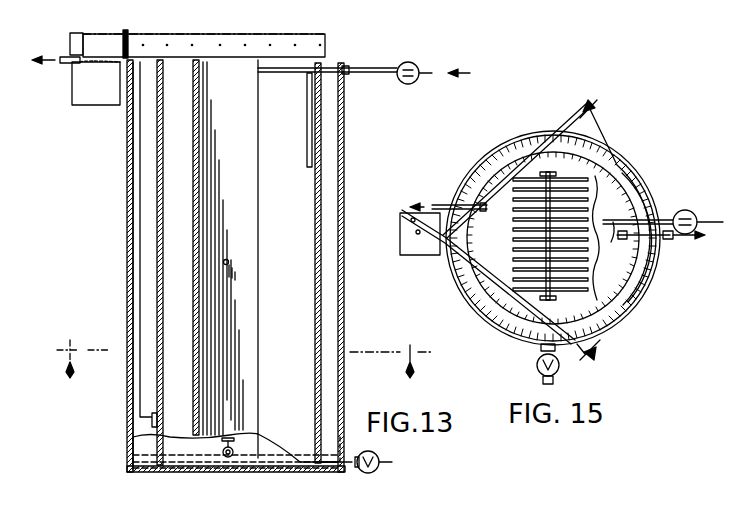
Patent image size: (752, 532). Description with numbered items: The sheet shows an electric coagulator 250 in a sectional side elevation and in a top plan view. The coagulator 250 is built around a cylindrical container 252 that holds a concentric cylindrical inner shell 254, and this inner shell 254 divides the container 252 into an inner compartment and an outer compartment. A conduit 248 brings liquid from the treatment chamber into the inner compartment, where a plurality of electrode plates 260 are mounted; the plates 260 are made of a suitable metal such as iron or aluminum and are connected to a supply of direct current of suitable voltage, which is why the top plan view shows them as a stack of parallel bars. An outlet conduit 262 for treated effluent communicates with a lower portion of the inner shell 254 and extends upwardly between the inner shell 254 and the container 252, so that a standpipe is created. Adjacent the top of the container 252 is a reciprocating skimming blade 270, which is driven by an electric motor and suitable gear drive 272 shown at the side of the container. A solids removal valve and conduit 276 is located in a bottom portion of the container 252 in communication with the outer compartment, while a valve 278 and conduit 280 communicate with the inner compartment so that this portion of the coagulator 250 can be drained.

In FIG. 13, the conduit 248 is at (328, 77).
In FIG. 13, the electric coagulator 250 is at (127, 215).
In FIG. 13, the cylindrical container 252 is at (127, 437).
In FIG. 13, the cylindrical inner shell 254 is at (322, 175).
In FIG. 15, the electrode plates 260 is at (568, 185).
In FIG. 13, the outlet conduit 262 is at (127, 128).
In FIG. 15, the reciprocating skimming blade 270 is at (475, 245).
In FIG. 13, the electric motor and gear drive 272 is at (72, 88).
In FIG. 15, the electric motor and gear drive 272 is at (428, 257).
In FIG. 13, the solids removal valve and conduit 276 is at (238, 460).
In FIG. 15, the solids removal valve and conduit 276 is at (537, 372).
In FIG. 15, the valve 278 is at (675, 240).
In FIG. 15, the conduit 280 is at (643, 275).